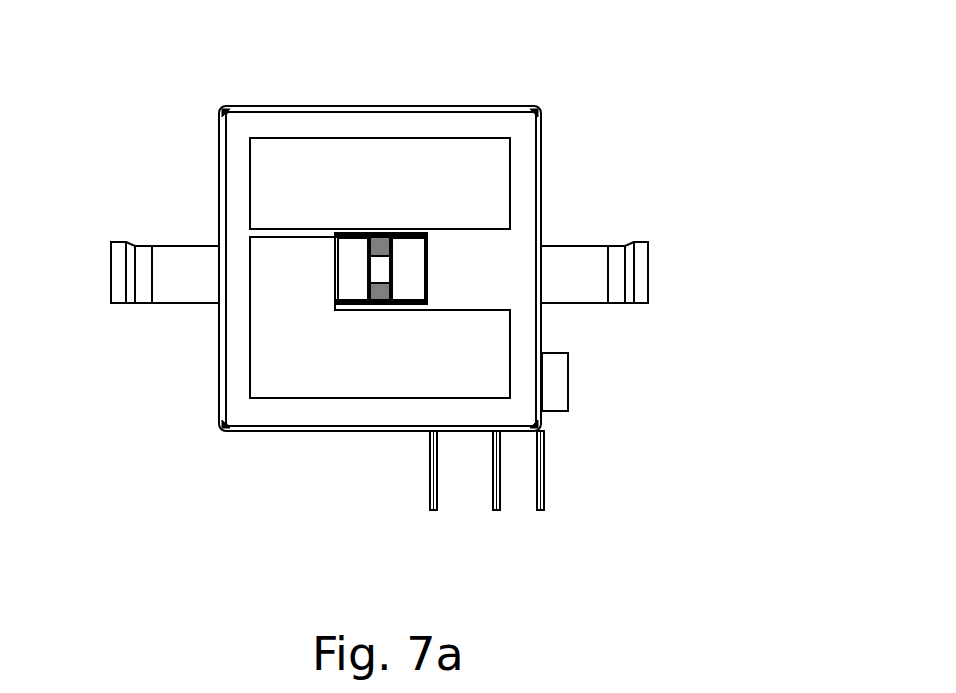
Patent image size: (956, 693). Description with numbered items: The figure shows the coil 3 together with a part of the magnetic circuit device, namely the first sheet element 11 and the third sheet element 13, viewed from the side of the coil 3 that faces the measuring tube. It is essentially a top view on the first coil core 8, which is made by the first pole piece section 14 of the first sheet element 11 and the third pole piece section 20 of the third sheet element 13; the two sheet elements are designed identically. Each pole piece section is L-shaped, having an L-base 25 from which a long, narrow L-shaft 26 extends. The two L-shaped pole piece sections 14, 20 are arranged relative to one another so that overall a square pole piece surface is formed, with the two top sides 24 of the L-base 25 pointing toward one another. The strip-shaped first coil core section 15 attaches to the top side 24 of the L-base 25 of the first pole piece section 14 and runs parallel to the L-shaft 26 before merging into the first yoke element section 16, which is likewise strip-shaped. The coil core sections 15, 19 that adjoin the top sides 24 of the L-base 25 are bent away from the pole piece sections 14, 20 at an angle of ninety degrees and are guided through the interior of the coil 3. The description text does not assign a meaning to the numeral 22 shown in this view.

The coil 3 is at (528, 388).
The first coil core 8 is at (302, 137).
The first sheet element 11 is at (515, 362).
The third sheet element 13 is at (247, 172).
The first pole piece section 14 is at (286, 383).
The first coil core section 15 is at (375, 265).
The first yoke element section 16 is at (172, 290).
The coil core section 19 is at (384, 277).
The third pole piece section 20 is at (460, 157).
The outlet connection piece 22 is at (588, 290).
The top side 24 is at (428, 268).
The L-base 25 is at (488, 198).
The L-shaft 26 is at (336, 158).